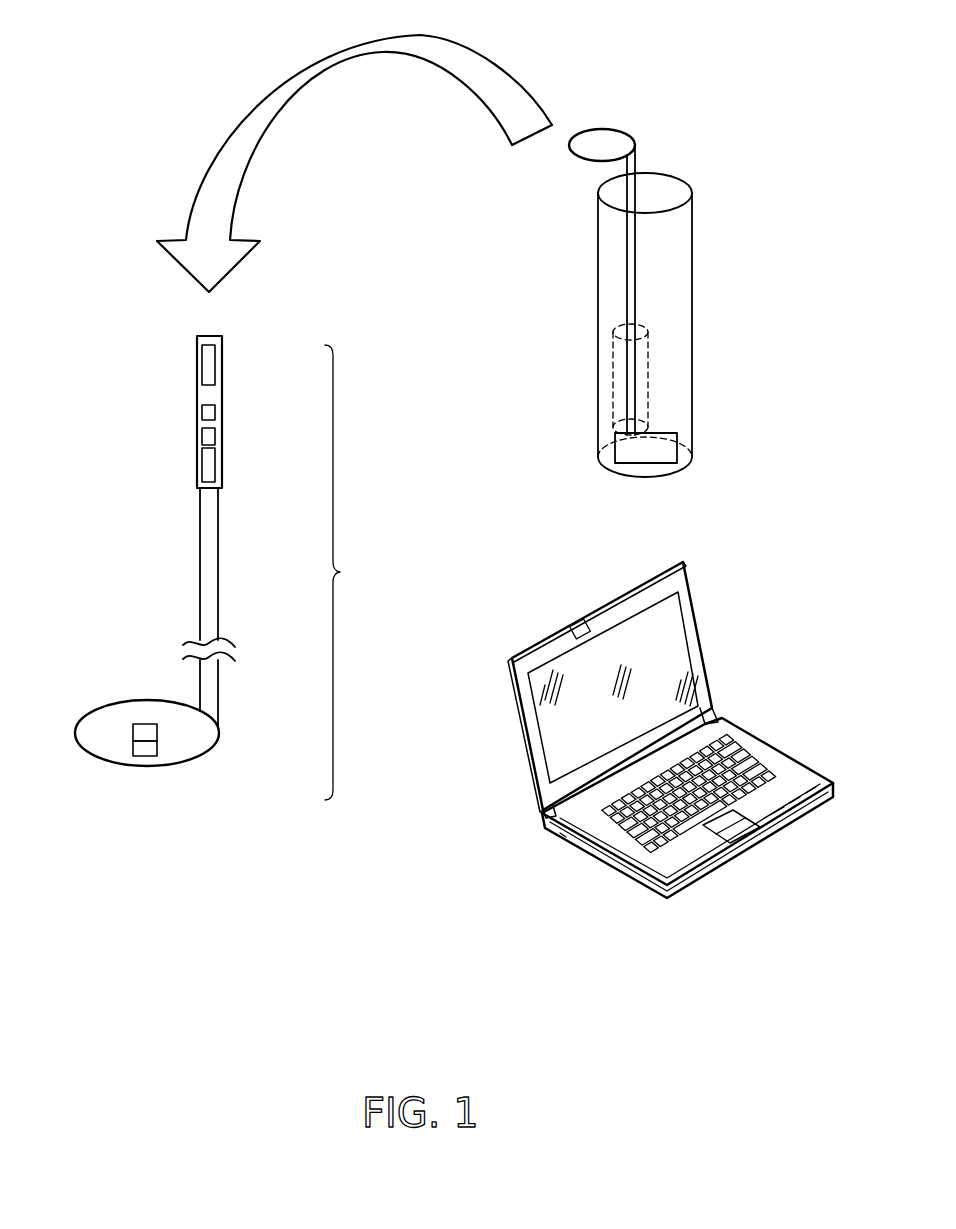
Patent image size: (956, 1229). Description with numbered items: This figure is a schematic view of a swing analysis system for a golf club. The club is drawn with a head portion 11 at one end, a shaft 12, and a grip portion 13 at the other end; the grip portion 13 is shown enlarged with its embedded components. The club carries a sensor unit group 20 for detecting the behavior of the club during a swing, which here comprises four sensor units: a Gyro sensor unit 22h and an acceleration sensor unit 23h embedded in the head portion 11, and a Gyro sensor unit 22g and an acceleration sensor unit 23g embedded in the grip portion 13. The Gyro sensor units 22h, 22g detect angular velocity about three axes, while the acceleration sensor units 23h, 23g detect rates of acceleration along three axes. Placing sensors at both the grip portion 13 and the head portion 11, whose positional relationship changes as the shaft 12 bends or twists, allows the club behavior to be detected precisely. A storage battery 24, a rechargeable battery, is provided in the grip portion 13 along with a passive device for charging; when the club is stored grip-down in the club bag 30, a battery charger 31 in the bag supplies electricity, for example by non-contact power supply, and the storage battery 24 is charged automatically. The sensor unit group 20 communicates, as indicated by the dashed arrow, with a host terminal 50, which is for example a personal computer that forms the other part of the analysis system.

The head portion 11 is at (90, 716).
The shaft 12 is at (200, 563).
The grip portion 13 is at (197, 393).
The sensor unit group 20 is at (587, 612).
The Gyro sensor unit 22g is at (215, 412).
The acceleration sensor unit 23g is at (215, 437).
The Gyro sensor unit 22h is at (157, 735).
The acceleration sensor unit 23h is at (157, 745).
The storage battery 24 is at (215, 356).
The club bag 30 is at (692, 293).
The battery charger 31 is at (677, 450).
The host terminal 50 is at (703, 641).